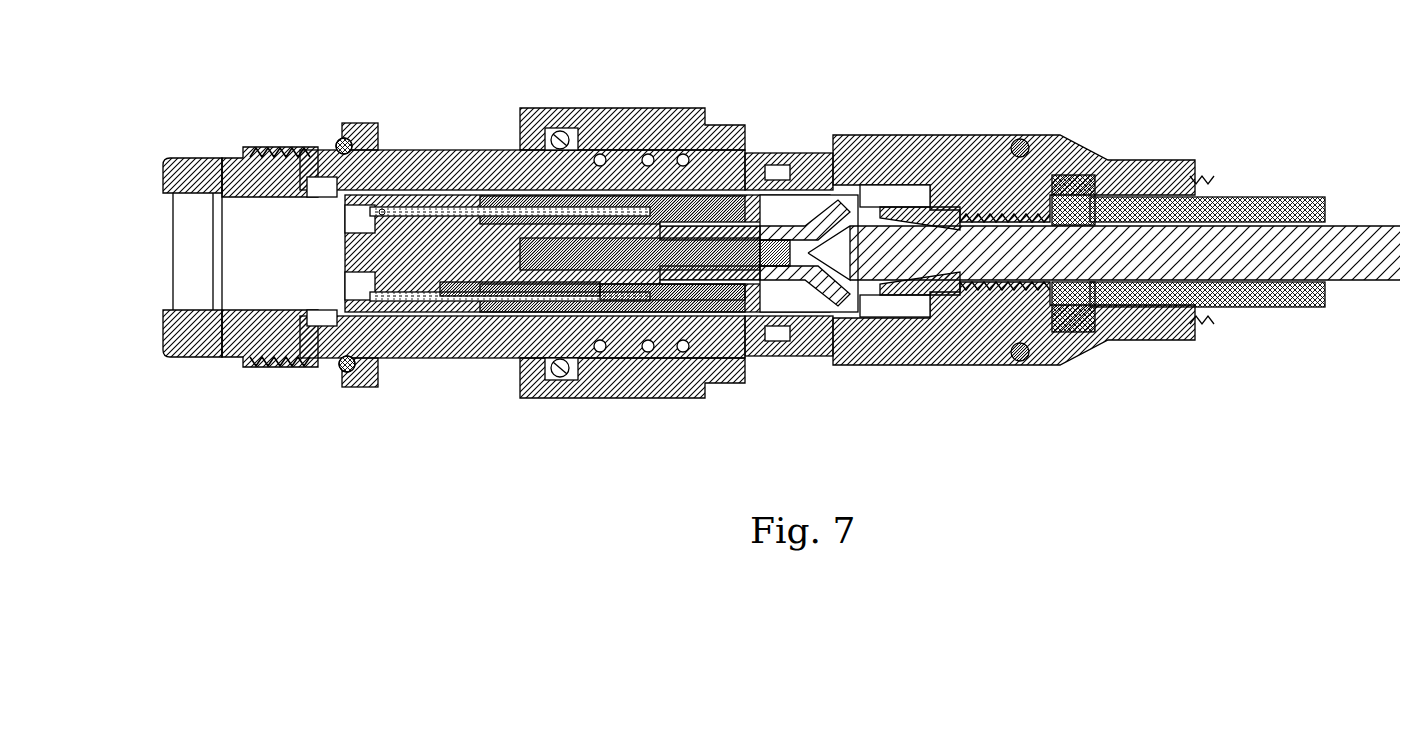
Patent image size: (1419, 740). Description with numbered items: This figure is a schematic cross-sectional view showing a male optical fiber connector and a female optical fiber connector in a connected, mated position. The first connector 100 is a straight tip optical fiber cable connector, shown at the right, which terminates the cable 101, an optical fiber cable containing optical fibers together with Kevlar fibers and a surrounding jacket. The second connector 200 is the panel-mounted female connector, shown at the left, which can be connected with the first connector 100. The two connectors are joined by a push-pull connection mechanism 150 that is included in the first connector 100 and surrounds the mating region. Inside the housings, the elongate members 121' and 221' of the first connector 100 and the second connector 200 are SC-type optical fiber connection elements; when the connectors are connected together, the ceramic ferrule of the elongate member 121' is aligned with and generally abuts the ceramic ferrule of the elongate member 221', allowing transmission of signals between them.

The second connector 200 is at (360, 118).
The push-pull connection mechanism 150 is at (593, 105).
The first connector 100 is at (981, 131).
The cable 101 is at (1362, 233).
The elongate member 221' is at (520, 350).
The elongate member 121' is at (672, 368).